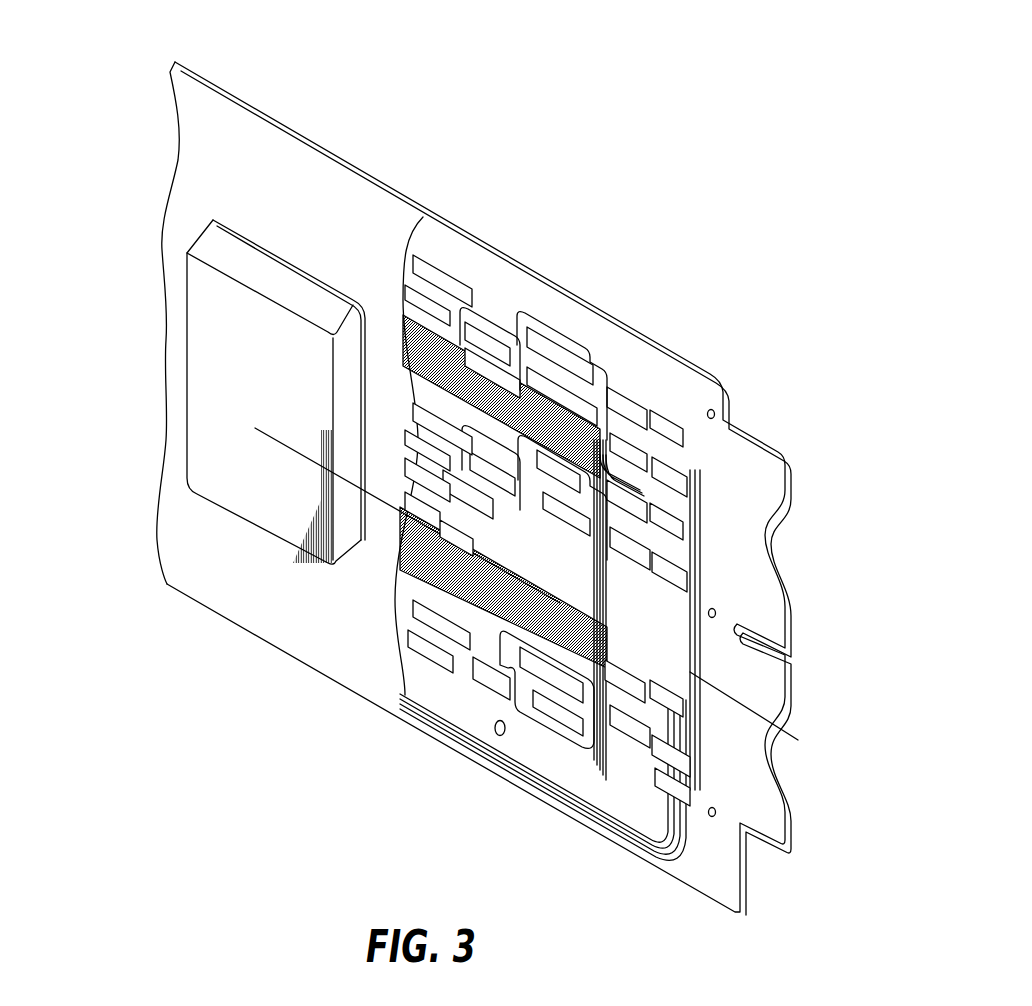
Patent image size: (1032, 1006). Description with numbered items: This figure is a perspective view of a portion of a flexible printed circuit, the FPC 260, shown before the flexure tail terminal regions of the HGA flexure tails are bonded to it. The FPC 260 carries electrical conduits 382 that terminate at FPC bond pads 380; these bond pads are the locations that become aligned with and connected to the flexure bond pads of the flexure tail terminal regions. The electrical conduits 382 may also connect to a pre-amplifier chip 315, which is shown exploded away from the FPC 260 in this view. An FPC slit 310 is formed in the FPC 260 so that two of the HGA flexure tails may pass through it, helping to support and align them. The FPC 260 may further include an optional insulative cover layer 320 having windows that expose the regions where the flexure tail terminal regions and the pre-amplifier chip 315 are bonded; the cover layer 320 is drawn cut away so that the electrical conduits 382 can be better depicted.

The flexible printed circuit 260 is at (472, 54).
The FPC slit 310 is at (792, 651).
The pre-amplifier chip 315 is at (220, 373).
The insulative cover layer 320 is at (258, 612).
The FPC bond pads 380 is at (560, 355).
The electrical conduits 382 is at (492, 377).